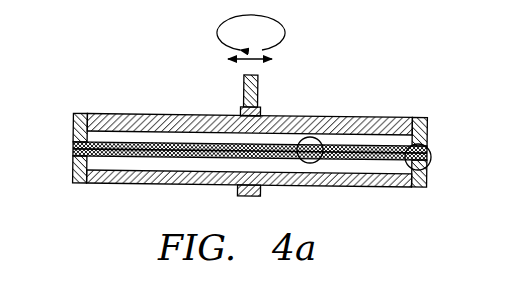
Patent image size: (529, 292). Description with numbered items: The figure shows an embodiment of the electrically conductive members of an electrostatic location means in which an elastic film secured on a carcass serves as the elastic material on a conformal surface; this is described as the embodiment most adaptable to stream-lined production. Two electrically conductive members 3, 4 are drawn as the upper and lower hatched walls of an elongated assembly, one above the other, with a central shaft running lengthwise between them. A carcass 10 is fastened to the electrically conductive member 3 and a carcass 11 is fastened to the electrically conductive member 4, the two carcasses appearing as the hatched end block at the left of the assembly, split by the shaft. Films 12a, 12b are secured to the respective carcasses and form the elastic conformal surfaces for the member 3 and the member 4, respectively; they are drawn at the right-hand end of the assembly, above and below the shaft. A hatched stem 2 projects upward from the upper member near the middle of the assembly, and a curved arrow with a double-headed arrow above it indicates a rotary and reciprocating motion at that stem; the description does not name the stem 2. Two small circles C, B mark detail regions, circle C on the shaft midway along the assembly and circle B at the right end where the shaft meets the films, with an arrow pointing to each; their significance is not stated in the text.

The drive stem / nipple 2 is at (241, 80).
The electrically conductive member 3 is at (134, 113).
The electrically conductive member 4 is at (98, 181).
The carcass 10 is at (73, 127).
The carcass 11 is at (74, 165).
The film 12a is at (428, 121).
The film 12b is at (411, 187).
The detail circle C is at (313, 136).
The detail circle B is at (433, 157).